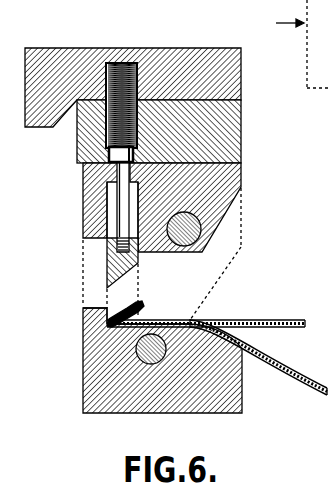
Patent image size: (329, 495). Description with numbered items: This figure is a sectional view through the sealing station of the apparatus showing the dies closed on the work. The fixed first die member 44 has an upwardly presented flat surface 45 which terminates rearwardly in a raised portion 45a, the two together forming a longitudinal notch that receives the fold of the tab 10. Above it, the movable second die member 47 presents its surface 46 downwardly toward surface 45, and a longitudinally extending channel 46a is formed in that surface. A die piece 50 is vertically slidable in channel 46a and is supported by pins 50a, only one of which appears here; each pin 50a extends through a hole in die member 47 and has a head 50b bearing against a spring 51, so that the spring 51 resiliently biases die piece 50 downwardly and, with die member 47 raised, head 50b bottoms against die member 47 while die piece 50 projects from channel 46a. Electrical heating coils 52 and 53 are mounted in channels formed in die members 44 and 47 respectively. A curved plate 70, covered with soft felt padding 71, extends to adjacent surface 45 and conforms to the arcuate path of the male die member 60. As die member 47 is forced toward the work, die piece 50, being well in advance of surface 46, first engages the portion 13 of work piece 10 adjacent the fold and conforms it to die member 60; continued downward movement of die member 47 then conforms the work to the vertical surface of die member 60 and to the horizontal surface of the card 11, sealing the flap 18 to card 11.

The tab 10 is at (168, 319).
The card 11 is at (265, 320).
The portion of work piece 13 is at (133, 311).
The flap 18 is at (190, 319).
The first die member 44 is at (100, 393).
The flat surface 45 is at (110, 328).
The raised portion 45a is at (88, 307).
The surface of die member 47 46 is at (183, 253).
The channel 46a is at (110, 220).
The second die member 47 is at (228, 180).
The die piece 50 is at (107, 268).
The pin 50a is at (122, 197).
The head 50b is at (110, 157).
The spring 51 is at (122, 72).
The electrical heating coil 52 is at (135, 352).
The electrical heating coil 53 is at (192, 227).
The male die member 60 is at (140, 318).
The plate 70 is at (296, 381).
The felt padding 71 is at (297, 375).